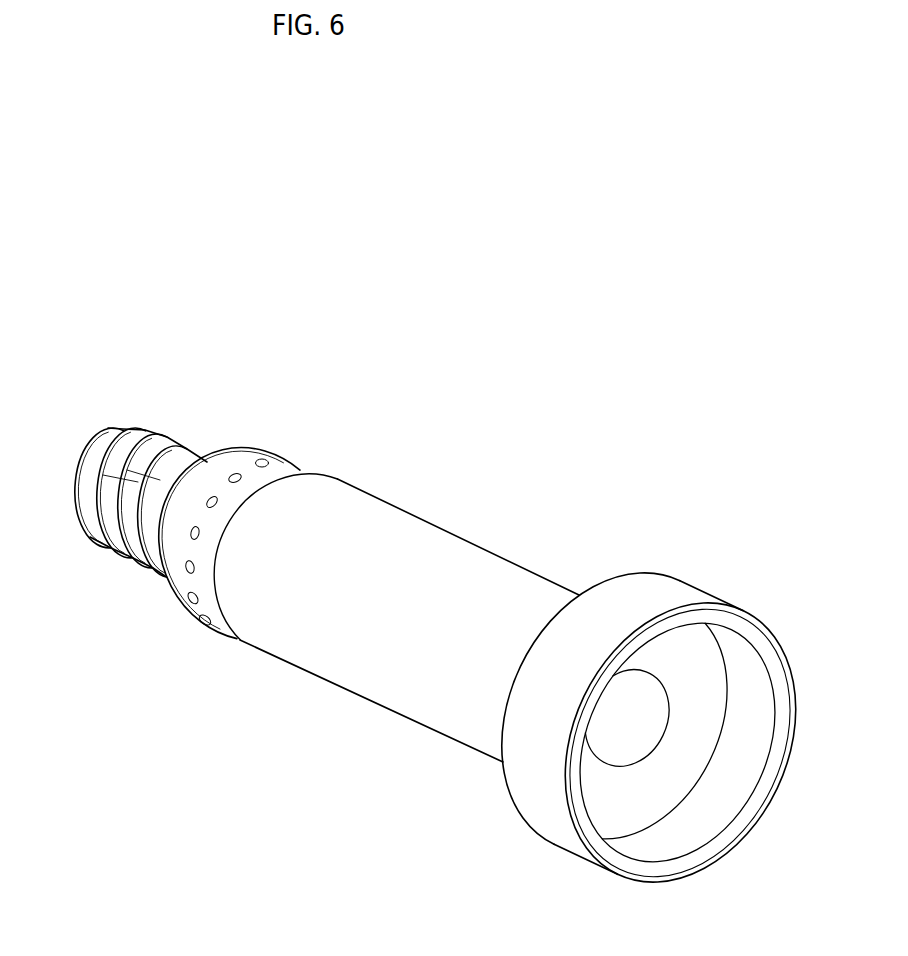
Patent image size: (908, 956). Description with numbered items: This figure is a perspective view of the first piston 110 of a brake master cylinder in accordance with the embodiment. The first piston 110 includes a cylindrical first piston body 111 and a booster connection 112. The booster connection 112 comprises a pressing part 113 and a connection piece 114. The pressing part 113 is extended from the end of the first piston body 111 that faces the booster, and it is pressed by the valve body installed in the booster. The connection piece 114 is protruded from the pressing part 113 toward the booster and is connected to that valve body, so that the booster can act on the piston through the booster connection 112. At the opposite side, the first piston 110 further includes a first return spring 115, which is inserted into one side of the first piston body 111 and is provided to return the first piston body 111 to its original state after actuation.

The first piston 110 is at (310, 311).
The first piston body 111 is at (380, 557).
The booster connection 112 is at (808, 522).
The pressing part 113 is at (697, 703).
The connection piece 114 is at (730, 620).
The first return spring 115 is at (148, 445).